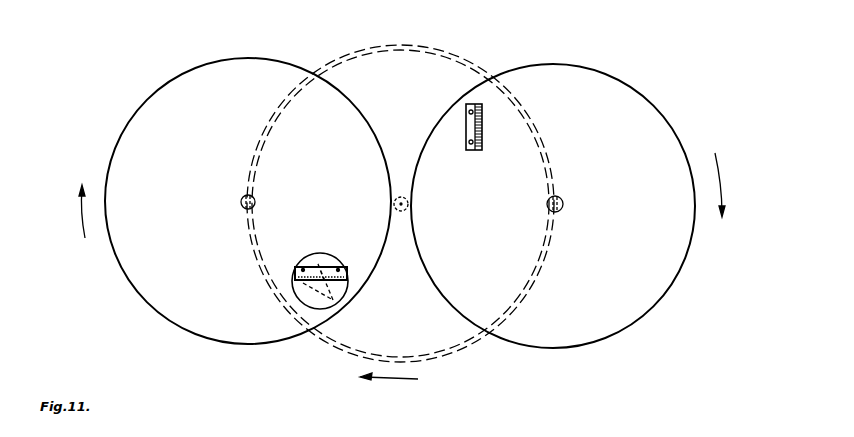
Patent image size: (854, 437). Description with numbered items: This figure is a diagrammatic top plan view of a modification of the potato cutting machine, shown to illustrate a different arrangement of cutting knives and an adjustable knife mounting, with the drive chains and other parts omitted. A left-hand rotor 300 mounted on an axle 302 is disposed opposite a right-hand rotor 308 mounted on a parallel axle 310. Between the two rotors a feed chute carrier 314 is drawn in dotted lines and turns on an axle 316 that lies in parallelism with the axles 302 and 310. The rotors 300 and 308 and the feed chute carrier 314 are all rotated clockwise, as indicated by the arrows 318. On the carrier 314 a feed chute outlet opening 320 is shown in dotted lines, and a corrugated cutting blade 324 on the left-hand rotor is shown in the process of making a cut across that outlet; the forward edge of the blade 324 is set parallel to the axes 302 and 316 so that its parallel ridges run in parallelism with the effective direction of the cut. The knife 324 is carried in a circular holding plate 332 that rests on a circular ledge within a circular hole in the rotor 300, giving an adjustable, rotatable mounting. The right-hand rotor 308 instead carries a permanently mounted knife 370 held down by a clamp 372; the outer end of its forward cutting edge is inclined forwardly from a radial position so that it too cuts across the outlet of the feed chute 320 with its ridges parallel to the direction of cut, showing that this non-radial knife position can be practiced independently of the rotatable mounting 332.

The left-hand rotor 300 is at (172, 322).
The right-hand rotor 308 is at (637, 317).
The feed chute carrier 314 is at (442, 358).
The axle 316 is at (410, 203).
The axle 302 is at (242, 206).
The axle 310 is at (563, 204).
The arrows 318 is at (82, 212).
The circular holding plate 332 is at (329, 253).
The corrugated cutting blade 324 is at (346, 285).
The feed chute outlet opening 320 is at (325, 310).
The knife 370 is at (482, 116).
The clamp 372 is at (470, 150).